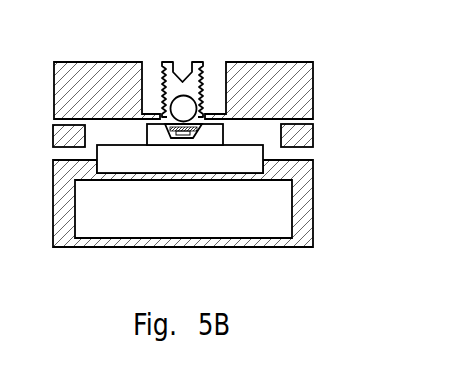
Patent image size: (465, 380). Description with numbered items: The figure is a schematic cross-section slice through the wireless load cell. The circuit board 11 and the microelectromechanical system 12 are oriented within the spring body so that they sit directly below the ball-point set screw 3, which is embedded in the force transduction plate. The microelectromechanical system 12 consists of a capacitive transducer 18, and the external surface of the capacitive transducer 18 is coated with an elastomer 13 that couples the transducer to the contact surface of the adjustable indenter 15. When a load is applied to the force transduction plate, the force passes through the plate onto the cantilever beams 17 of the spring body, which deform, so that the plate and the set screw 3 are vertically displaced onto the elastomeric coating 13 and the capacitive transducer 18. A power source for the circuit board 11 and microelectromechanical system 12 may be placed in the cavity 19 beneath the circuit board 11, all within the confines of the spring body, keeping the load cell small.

The ball-point set screw 3 is at (183, 84).
The circuit board 11 is at (107, 161).
The microelectromechanical system 12 is at (157, 135).
The elastomer 13 is at (295, 138).
The adjustable indenter 15 is at (195, 118).
The cantilever beams 17 is at (68, 134).
The capacitive transducer 18 is at (197, 134).
The cavity 19 is at (265, 217).